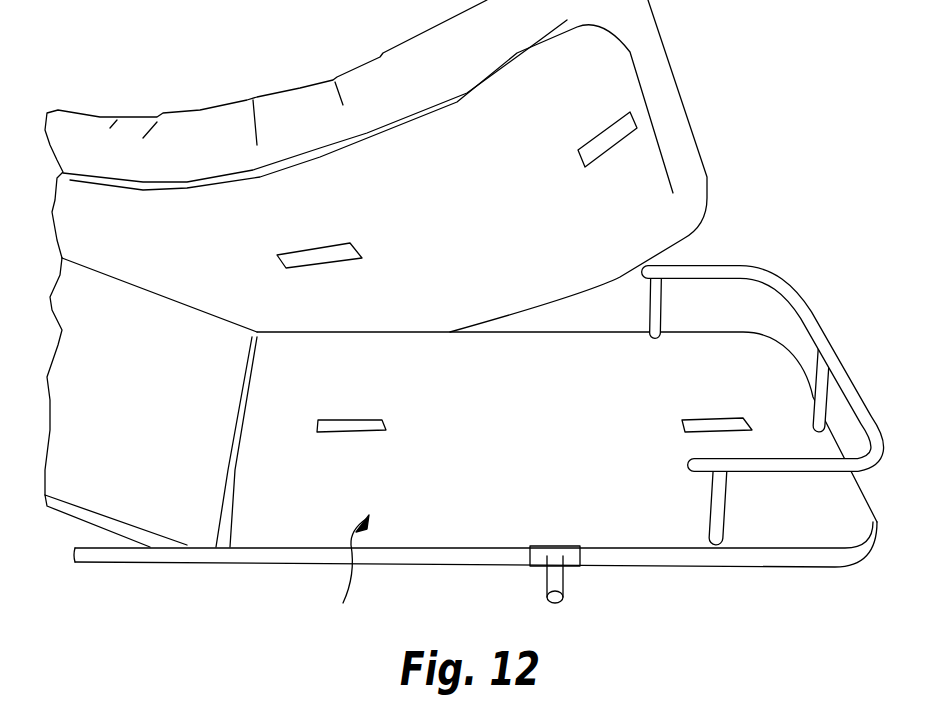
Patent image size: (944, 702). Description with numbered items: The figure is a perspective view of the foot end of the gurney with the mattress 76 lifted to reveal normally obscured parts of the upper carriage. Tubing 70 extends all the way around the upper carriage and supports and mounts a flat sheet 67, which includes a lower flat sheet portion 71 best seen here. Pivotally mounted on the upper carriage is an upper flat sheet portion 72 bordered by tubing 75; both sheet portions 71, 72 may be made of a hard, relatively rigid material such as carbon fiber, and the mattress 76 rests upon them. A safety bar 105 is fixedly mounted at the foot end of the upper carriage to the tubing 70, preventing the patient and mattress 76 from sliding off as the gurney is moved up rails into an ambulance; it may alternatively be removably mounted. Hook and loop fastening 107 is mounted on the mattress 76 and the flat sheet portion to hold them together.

The mattress 76 is at (484, 153).
The hook and loop fastening 107 is at (600, 157).
The upper flat sheet portion 72 is at (161, 414).
The lower flat sheet portion 71 is at (529, 458).
The tubing 75 is at (113, 520).
The flat sheet 67 is at (343, 574).
The tubing 70 is at (647, 557).
The safety bar 105 is at (827, 343).